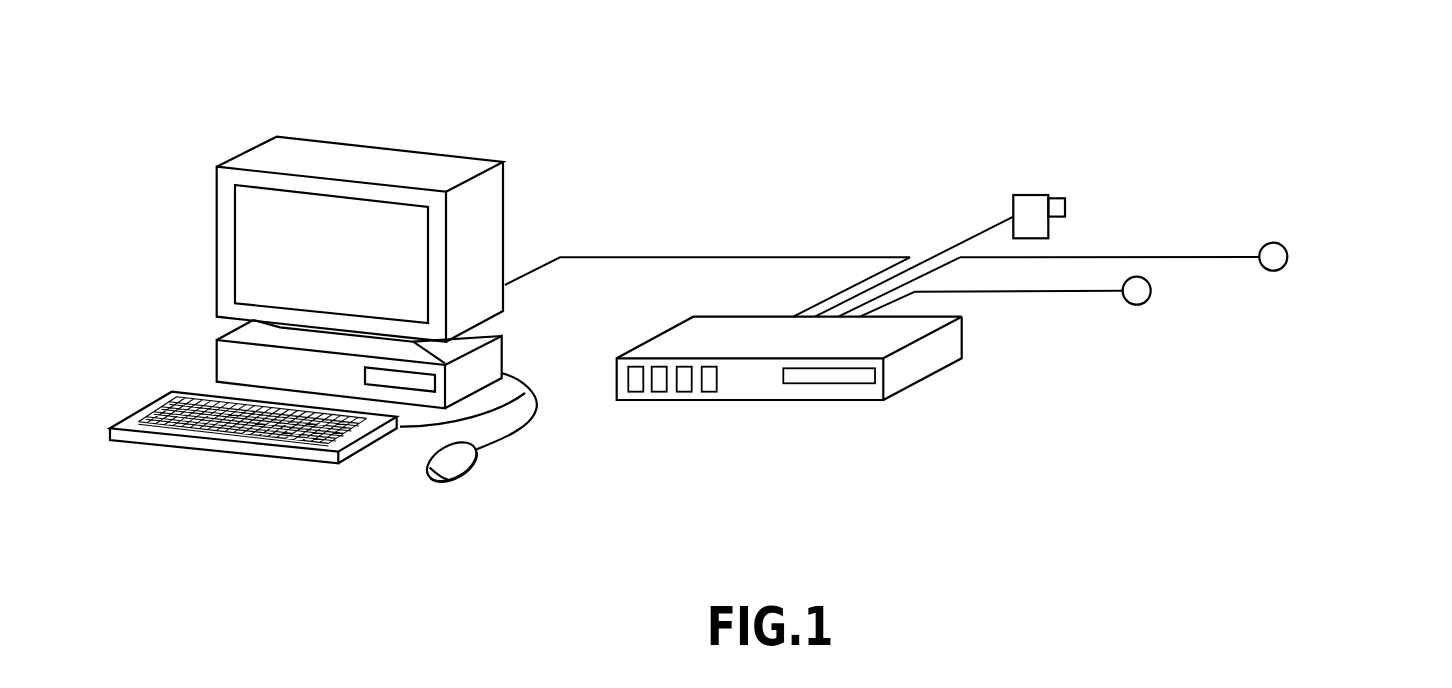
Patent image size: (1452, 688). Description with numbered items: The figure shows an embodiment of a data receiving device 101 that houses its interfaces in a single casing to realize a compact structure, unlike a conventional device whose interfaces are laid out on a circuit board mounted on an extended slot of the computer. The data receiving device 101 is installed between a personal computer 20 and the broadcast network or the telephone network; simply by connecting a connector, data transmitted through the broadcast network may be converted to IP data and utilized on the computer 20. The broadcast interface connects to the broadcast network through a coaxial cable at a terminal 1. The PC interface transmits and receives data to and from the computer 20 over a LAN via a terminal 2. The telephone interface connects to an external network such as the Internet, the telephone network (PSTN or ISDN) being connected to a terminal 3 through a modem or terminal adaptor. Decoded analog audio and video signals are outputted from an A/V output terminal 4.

The personal computer 20 is at (330, 141).
The terminal 2 is at (708, 257).
The terminal 1 is at (1028, 195).
The terminal 3 is at (1272, 243).
The A/V output terminal 4 is at (1137, 305).
The data receiving device 101 is at (750, 400).